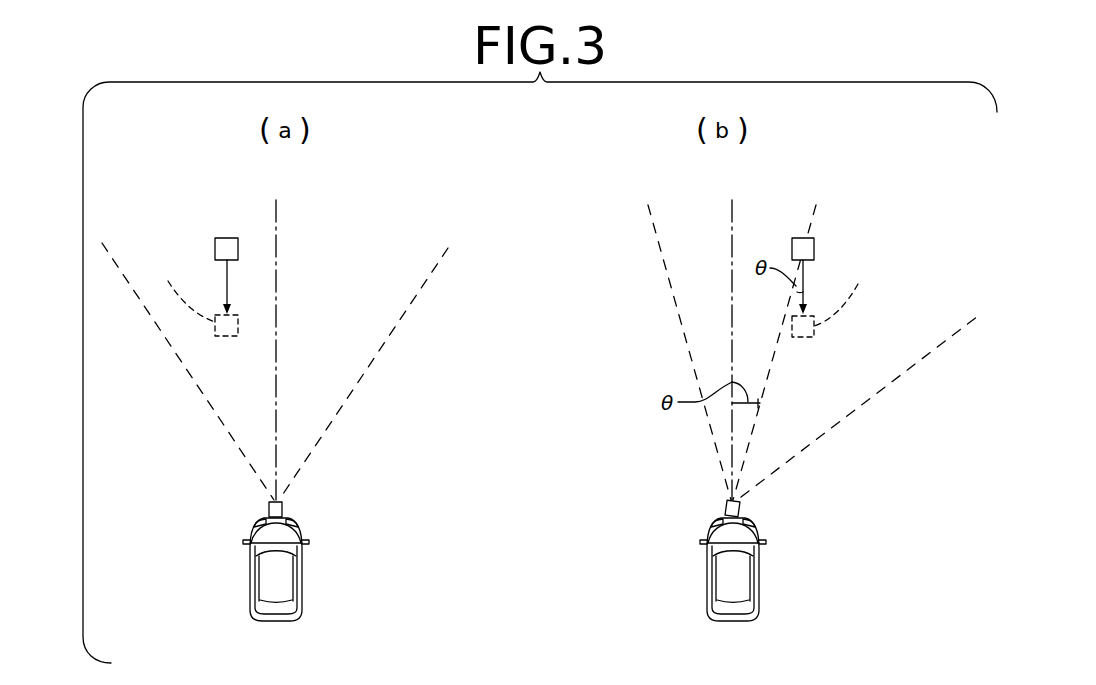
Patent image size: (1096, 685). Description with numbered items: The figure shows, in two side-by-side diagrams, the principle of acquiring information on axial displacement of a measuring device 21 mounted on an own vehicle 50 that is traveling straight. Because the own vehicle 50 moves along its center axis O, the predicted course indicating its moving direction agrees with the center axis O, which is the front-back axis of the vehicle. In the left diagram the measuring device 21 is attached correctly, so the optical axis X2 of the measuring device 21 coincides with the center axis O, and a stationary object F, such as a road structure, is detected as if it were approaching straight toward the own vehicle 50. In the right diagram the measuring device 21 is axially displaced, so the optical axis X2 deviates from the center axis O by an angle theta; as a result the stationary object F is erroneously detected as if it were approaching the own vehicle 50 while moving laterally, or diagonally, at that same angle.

The measuring device 21 is at (284, 509).
The own vehicle 50 is at (302, 590).
The stationary object F is at (215, 250).
The center axis O is at (294, 191).
The optical axis X2 is at (570, 334).